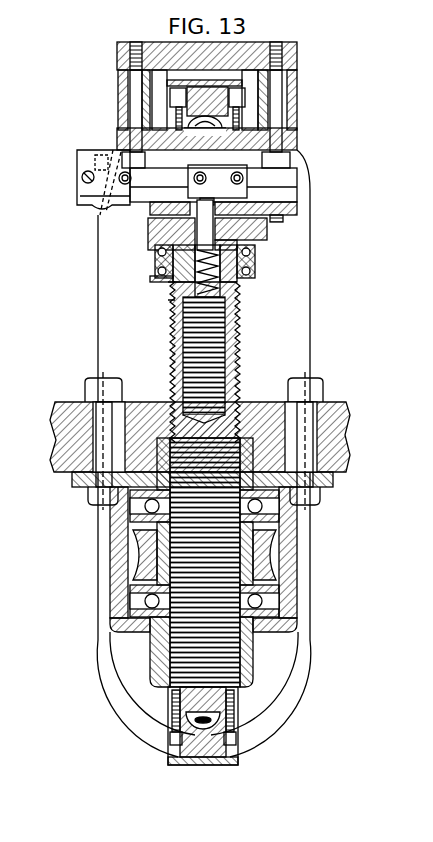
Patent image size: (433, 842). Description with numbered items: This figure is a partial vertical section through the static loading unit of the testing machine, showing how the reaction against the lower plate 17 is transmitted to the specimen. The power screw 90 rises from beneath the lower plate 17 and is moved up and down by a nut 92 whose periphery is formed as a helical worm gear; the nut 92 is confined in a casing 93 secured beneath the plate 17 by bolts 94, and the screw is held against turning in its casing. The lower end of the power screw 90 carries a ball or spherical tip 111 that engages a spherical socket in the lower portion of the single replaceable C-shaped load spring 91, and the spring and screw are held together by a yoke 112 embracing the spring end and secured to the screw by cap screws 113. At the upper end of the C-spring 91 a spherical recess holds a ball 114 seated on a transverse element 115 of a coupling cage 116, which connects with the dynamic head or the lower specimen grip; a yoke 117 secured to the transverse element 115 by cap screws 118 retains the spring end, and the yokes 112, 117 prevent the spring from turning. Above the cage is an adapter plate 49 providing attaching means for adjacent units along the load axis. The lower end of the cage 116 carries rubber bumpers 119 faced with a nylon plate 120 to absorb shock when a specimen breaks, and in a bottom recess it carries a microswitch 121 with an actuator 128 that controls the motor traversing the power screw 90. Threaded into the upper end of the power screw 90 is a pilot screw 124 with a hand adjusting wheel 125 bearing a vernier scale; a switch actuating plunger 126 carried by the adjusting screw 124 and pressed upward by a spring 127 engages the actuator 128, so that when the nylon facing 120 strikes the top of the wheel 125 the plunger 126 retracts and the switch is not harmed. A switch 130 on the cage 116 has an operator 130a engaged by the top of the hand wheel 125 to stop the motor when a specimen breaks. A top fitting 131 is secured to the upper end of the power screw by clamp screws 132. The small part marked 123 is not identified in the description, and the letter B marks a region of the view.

The adapter plate 49 is at (297, 55).
The yoke 117 is at (170, 80).
The cap screws 118 is at (237, 100).
The coupling cage 116 is at (243, 105).
The ball or spherical element 114 is at (212, 126).
The transverse element 115 is at (297, 135).
The switch 130 is at (80, 190).
The operator 130a is at (126, 213).
The rubber bumpers 119 is at (288, 193).
The microswitch 121 is at (194, 190).
The nylon plate 120 is at (297, 208).
The clip 123 is at (283, 222).
The hand adjusting wheel 125 is at (254, 241).
The actuator 128 is at (204, 230).
The switch actuating plunger 126 is at (157, 248).
The top fitting 131 is at (254, 265).
The clamp screws 132 is at (170, 277).
The spring 127 is at (170, 288).
The pilot screw 124 is at (240, 290).
The power screw 90 is at (240, 347).
The C-shaped load spring 91 is at (98, 325).
The detail circle B is at (95, 291).
The lower plate 17 is at (53, 406).
The bolts 94 is at (94, 515).
The nut 92 is at (140, 568).
The casing 93 is at (112, 636).
The spherical tip 111 is at (177, 740).
The yoke 112 is at (193, 766).
The cap screws 113 is at (232, 742).